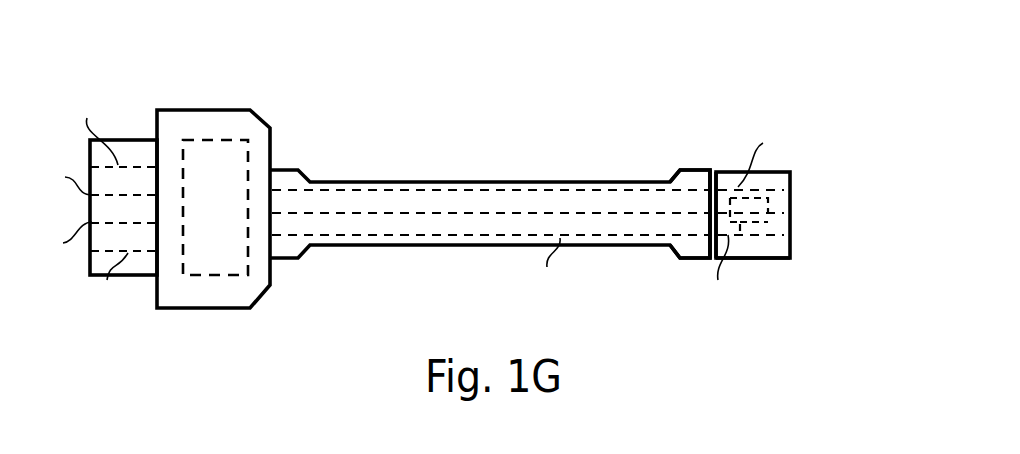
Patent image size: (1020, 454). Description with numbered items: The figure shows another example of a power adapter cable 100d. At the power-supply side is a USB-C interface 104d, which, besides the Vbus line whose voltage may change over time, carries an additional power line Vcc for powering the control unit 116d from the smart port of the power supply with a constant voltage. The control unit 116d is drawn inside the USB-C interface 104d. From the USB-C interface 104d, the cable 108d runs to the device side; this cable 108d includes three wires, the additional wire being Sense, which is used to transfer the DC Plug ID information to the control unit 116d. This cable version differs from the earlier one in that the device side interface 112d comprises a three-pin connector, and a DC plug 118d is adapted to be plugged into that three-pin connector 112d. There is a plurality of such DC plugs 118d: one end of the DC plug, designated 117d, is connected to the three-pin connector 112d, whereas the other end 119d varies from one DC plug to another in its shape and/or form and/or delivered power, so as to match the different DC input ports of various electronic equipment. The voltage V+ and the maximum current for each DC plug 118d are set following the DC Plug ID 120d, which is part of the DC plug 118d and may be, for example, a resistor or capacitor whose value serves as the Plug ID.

The power adapter cable 100d is at (302, 78).
The USB-C interface 104d is at (155, 110).
The cable 108d is at (475, 182).
The device side interface 112d is at (683, 170).
The control unit 116d is at (212, 283).
The end of the DC plug 117d is at (714, 170).
The DC plug 118d is at (792, 195).
The other end of the DC plug 119d is at (787, 260).
The DC Plug ID 120d is at (768, 212).